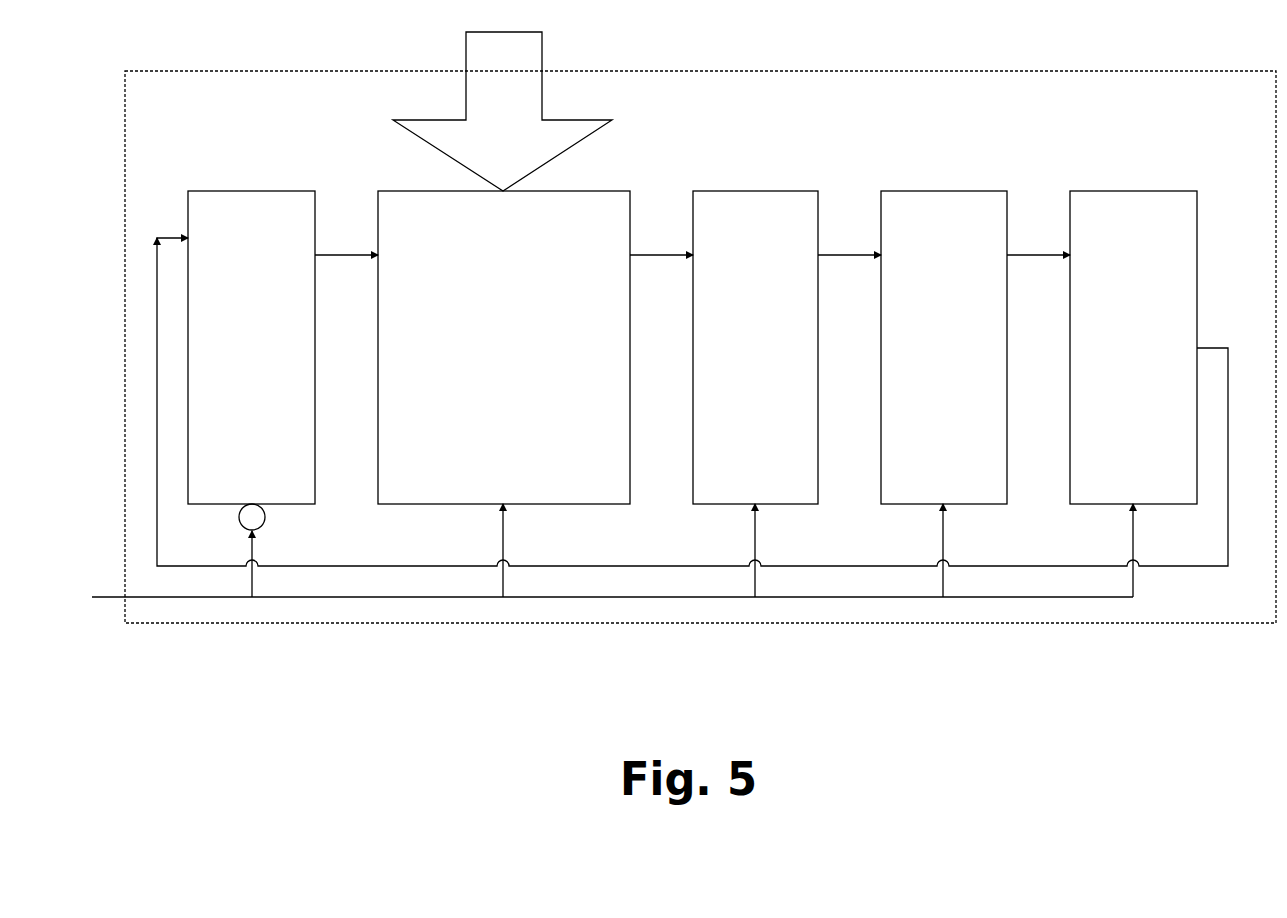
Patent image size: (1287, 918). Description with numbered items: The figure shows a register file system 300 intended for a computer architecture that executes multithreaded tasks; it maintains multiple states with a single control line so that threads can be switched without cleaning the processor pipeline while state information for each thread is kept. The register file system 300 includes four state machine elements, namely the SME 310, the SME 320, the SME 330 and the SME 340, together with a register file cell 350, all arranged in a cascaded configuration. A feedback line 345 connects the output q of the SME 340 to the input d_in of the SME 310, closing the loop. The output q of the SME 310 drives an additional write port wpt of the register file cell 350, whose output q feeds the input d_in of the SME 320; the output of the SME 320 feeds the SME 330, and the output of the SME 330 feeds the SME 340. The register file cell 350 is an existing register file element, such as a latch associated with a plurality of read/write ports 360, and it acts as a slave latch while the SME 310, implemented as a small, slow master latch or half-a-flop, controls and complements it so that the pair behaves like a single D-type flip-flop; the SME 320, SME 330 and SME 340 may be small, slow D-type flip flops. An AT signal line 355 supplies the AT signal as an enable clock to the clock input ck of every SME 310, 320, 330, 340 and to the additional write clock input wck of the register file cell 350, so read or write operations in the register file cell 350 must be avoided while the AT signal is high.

The register file system 300 is at (1073, 78).
The SME 310 is at (253, 191).
The SME 320 is at (760, 191).
The SME 330 is at (940, 191).
The SME 340 is at (1130, 191).
The feedback line 345 is at (1265, 522).
The register file cell 350 is at (596, 191).
The AT signal line 355 is at (1007, 597).
The read/write ports 360 is at (502, 111).